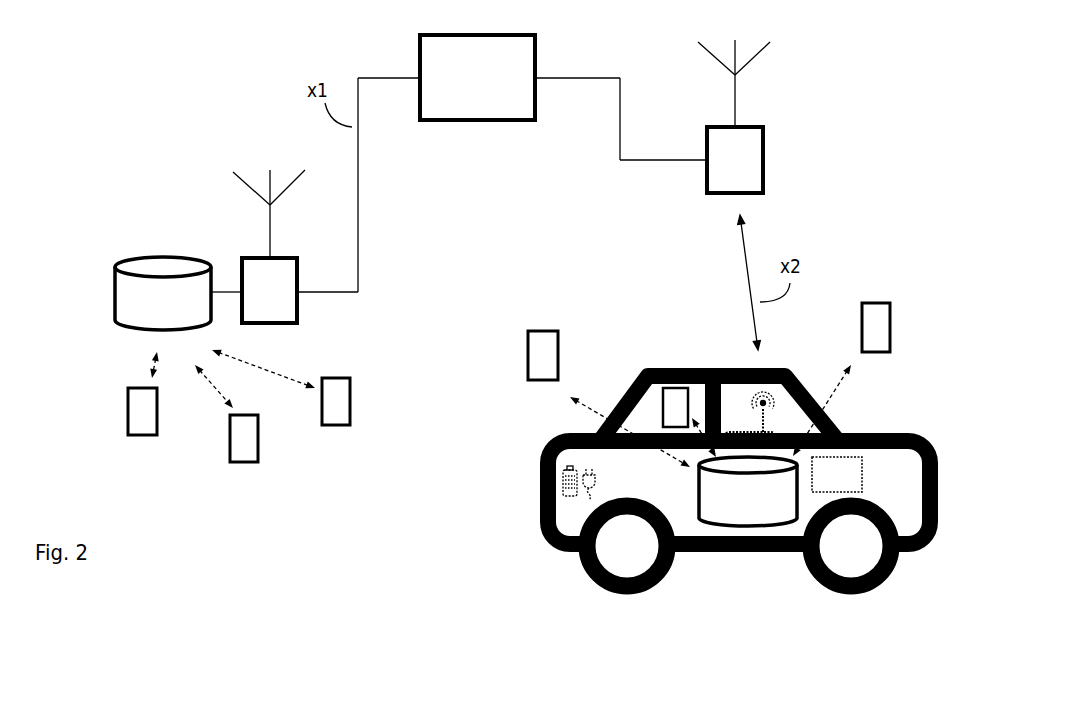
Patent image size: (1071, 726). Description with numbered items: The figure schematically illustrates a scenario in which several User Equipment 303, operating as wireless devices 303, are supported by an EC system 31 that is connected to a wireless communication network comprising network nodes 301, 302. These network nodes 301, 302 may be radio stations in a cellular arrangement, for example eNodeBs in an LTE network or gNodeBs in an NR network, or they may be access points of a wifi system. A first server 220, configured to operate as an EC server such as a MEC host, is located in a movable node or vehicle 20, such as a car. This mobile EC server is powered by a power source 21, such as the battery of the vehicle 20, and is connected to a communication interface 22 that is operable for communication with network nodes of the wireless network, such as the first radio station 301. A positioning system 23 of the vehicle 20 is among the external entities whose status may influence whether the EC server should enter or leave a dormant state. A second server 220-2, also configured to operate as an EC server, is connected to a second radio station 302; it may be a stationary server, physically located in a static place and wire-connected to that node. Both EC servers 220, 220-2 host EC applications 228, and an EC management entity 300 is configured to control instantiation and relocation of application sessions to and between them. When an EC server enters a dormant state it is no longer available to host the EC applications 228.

The vehicle 20 is at (936, 472).
The power source 21 is at (540, 487).
The communication interface 22 is at (740, 428).
The positioning system 23 is at (837, 474).
The EC system 31 is at (132, 112).
The first server 220 is at (698, 508).
The second server 220-2 is at (122, 291).
The EC applications 228 is at (412, 391).
The EC management entity 300 is at (458, 89).
The first radio station 301 is at (767, 163).
The second radio station 302 is at (297, 280).
The User Equipment 303 is at (147, 437).